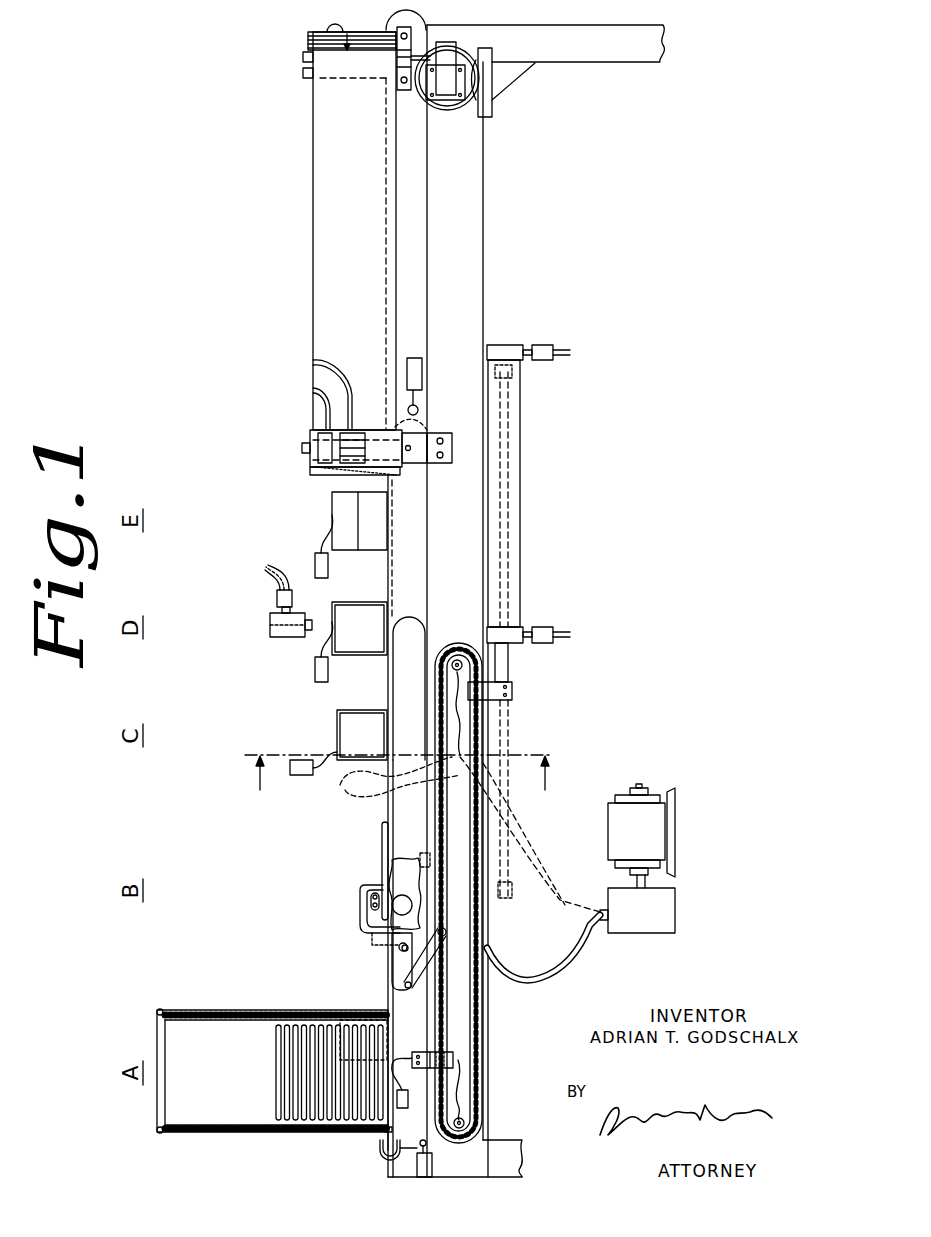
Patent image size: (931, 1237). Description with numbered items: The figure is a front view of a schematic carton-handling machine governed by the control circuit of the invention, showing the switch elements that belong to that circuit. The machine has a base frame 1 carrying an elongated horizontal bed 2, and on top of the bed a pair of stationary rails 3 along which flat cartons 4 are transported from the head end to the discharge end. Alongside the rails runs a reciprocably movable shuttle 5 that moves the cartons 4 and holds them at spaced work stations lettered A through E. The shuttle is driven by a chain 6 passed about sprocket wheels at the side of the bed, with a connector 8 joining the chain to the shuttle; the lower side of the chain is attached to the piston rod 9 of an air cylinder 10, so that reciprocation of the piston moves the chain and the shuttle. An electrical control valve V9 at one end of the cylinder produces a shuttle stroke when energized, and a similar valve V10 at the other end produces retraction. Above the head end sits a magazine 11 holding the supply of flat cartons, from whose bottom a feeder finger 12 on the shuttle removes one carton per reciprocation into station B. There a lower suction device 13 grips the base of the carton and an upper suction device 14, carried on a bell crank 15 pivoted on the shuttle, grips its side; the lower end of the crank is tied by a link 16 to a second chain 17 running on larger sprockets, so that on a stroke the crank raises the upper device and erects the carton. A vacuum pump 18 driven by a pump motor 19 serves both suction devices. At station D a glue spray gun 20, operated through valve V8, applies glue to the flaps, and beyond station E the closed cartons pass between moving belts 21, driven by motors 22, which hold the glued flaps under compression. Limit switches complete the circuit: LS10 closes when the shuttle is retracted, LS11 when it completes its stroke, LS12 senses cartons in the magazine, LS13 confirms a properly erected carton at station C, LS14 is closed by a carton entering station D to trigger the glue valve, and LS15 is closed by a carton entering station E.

The base frame 1 is at (550, 70).
The bed 2 is at (483, 275).
The stationary rails 3 is at (433, 556).
The cartons 4 is at (368, 552).
The shuttle 5 is at (412, 617).
The chain 6 is at (462, 1040).
The connector 8 is at (428, 1052).
The piston rod 9 is at (512, 668).
The air cylinder 10 is at (521, 545).
The magazine 11 is at (245, 1133).
The feeder finger 12 is at (372, 1136).
The lower suction device 13 is at (395, 880).
The upper suction device 14 is at (366, 886).
The bell crank 15 is at (392, 942).
The link 16 is at (411, 990).
The second chain 17 is at (435, 828).
The vacuum pump 18 is at (632, 934).
The pump motor 19 is at (608, 820).
The glue spray gun 20 is at (275, 637).
The moving belts 21 is at (313, 325).
The motors 22 is at (455, 112).
The electrical operating valve V8 is at (277, 597).
The electrical control valve V9 is at (545, 365).
The control valve V10 is at (546, 626).
The limit switch LS10 is at (382, 1153).
The limit switch LS11 is at (413, 358).
The limit switch LS12 is at (410, 1104).
The limit switch LS13 is at (305, 778).
The limit switch LS14 is at (315, 661).
The limit switch LS15 is at (315, 556).